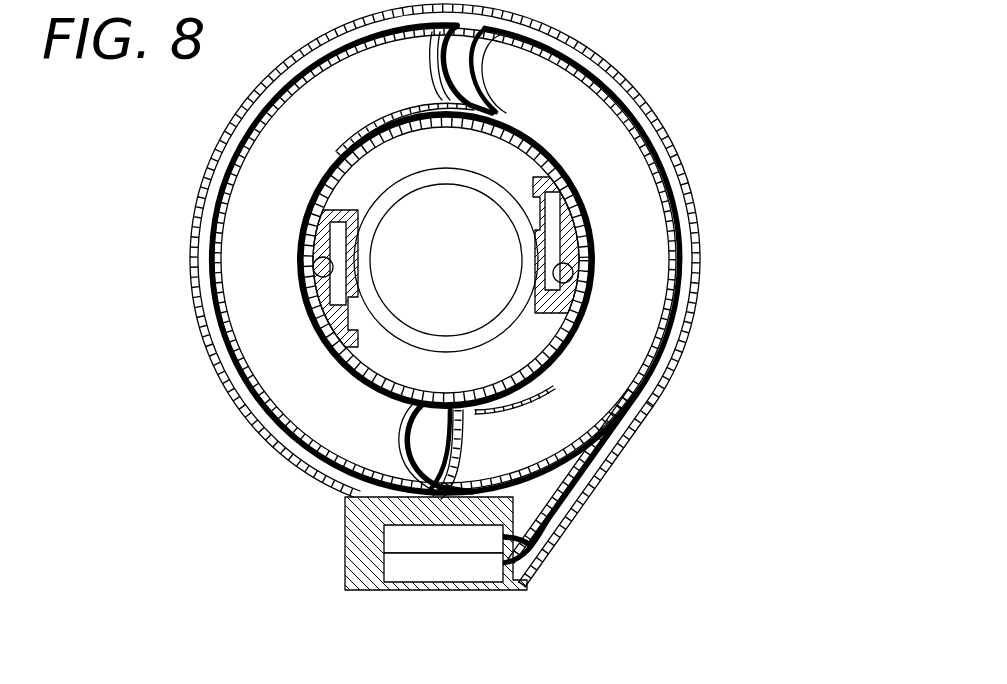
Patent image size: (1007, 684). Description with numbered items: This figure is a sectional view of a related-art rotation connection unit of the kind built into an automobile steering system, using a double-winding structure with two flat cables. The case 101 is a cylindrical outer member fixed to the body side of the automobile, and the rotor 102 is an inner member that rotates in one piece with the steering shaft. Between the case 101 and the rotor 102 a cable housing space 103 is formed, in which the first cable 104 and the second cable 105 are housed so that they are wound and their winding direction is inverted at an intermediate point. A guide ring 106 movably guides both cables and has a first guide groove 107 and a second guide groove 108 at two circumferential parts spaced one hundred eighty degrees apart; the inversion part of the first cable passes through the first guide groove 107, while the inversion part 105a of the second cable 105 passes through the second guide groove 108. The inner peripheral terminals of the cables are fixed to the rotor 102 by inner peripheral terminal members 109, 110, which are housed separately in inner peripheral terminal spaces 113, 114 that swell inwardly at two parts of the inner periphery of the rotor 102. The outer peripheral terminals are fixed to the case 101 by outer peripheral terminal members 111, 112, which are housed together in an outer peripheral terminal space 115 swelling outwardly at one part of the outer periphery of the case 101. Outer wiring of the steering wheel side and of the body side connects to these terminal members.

The case 101 is at (203, 352).
The rotor 102 is at (330, 162).
The cable housing space 103 is at (683, 168).
The first cable 104 is at (520, 570).
The second cable 105 is at (557, 550).
The inversion part of the second cable 105a is at (543, 43).
The guide ring 106 is at (563, 97).
The first guide groove 107 is at (427, 463).
The second guide groove 108 is at (435, 55).
The inner peripheral terminal member 109 is at (333, 237).
The inner peripheral terminal member 110 is at (560, 247).
The outer peripheral terminal member 111 is at (400, 567).
The outer peripheral terminal member 112 is at (433, 540).
The inner peripheral terminal space 113 is at (326, 272).
The inner peripheral terminal space 114 is at (603, 297).
The outer peripheral terminal space 115 is at (445, 580).